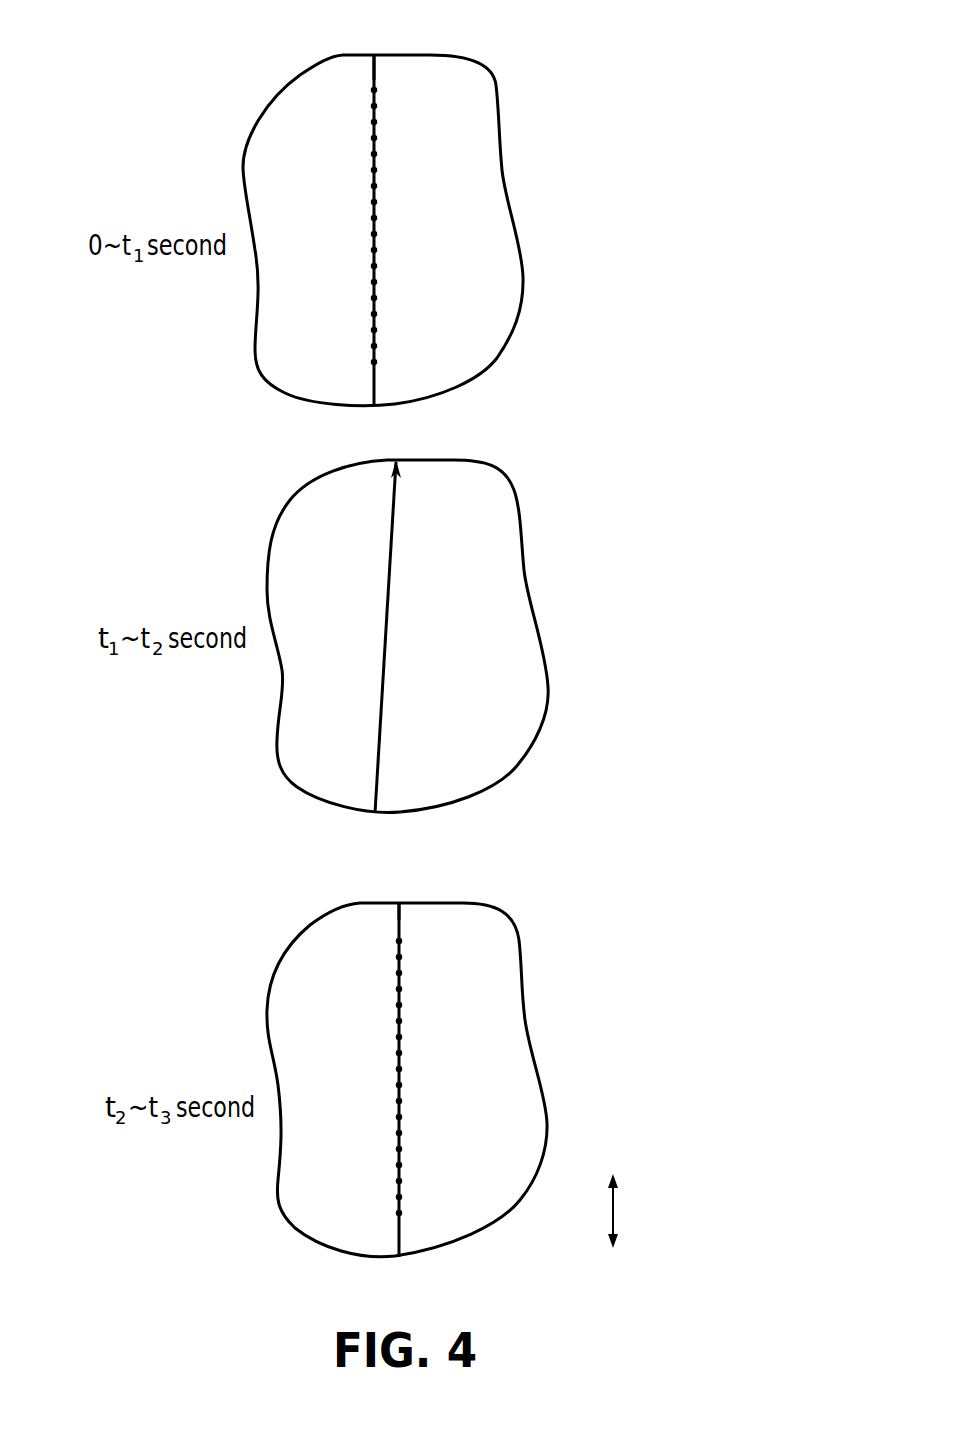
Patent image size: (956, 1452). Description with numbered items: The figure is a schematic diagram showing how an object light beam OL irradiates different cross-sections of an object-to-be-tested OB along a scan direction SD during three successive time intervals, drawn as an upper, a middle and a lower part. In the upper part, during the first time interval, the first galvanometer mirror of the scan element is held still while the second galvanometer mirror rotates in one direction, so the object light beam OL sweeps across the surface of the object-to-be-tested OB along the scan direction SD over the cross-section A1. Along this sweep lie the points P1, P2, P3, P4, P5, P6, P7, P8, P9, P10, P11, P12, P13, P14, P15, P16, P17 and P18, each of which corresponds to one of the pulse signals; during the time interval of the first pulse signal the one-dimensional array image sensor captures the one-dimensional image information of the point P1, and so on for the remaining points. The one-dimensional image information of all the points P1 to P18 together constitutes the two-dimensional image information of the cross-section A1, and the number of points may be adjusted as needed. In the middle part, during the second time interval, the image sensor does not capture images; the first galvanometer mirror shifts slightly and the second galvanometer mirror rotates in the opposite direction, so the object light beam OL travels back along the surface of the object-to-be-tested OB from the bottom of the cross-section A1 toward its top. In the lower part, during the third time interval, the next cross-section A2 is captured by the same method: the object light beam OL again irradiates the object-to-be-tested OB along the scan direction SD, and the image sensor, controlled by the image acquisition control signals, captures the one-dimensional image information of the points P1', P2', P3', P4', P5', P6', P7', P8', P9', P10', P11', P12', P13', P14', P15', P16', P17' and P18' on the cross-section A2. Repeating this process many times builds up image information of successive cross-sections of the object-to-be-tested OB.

The object-to-be-tested OB is at (476, 76).
The object light beam OL is at (376, 77).
The cross-section A1 is at (373, 79).
The cross-section A2 is at (400, 918).
The scan direction SD is at (631, 1211).
The point P1 is at (402, 88).
The point P2 is at (346, 105).
The point P3 is at (402, 120).
The point P4 is at (346, 137).
The point P5 is at (402, 152).
The point P6 is at (346, 169).
The point P7 is at (402, 184).
The point P8 is at (346, 201).
The point P9 is at (402, 216).
The point P10 is at (340, 233).
The point P11 is at (408, 248).
The point P12 is at (340, 265).
The point P13 is at (408, 280).
The point P14 is at (340, 297).
The point P15 is at (408, 312).
The point P16 is at (340, 329).
The point P17 is at (408, 344).
The point P18 is at (340, 361).
The point P1' is at (432, 939).
The point P2' is at (369, 956).
The point P3' is at (432, 971).
The point P4' is at (369, 988).
The point P5' is at (432, 1003).
The point P6' is at (369, 1020).
The point P7' is at (432, 1035).
The point P8' is at (369, 1052).
The point P9' is at (432, 1067).
The point P10' is at (364, 1084).
The point P11' is at (437, 1099).
The point P12' is at (364, 1116).
The point P13' is at (437, 1131).
The point P14' is at (364, 1148).
The point P15' is at (437, 1163).
The point P16' is at (364, 1180).
The point P17' is at (437, 1195).
The point P18' is at (364, 1212).